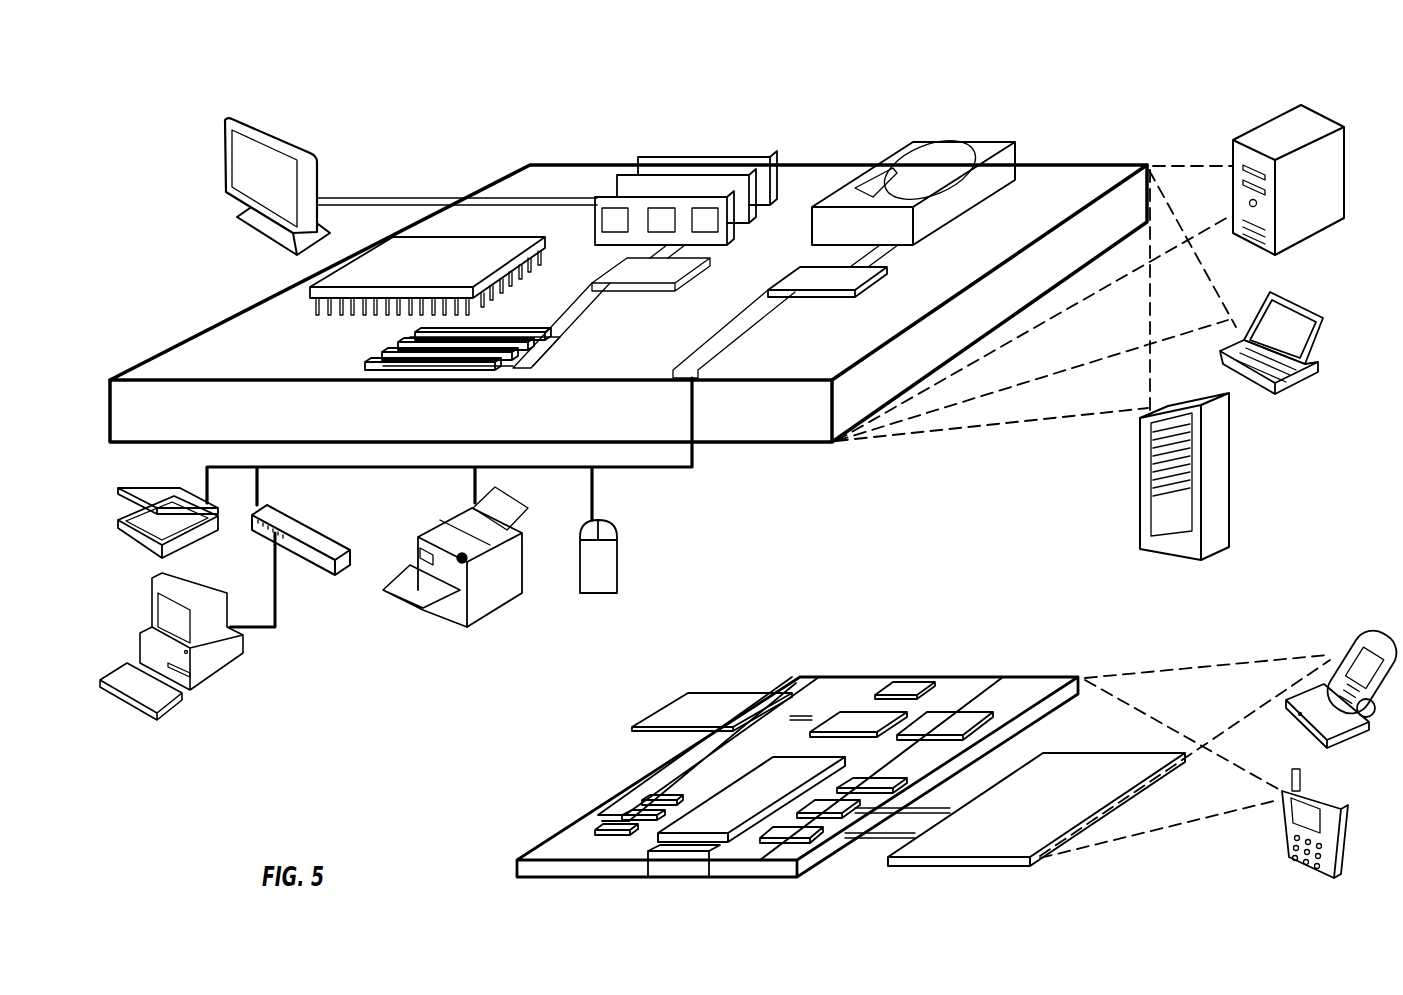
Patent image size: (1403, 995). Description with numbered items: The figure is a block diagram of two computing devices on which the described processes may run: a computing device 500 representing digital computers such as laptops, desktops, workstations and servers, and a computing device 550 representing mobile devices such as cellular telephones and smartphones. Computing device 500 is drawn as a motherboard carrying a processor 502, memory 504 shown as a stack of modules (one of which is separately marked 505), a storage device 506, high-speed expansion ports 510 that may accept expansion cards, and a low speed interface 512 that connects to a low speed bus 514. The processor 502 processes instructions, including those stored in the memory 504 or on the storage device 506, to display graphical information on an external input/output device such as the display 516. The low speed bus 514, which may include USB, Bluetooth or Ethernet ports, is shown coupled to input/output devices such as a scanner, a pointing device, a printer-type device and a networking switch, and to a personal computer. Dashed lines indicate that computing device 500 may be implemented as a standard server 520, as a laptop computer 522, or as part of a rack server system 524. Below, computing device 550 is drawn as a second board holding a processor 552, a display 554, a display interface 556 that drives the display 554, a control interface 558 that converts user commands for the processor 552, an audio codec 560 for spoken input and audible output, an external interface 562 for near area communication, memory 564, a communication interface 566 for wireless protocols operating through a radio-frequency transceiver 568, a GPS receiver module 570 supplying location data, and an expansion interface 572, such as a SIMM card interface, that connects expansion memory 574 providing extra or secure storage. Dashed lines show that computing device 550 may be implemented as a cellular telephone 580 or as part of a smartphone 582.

The computing device 500 is at (490, 138).
The processor 502 is at (305, 292).
The memory 504 is at (672, 157).
The memory module 505 is at (638, 160).
The storage device 506 is at (918, 142).
The high-speed expansion ports 510 is at (372, 348).
The low speed interface 512 is at (815, 280).
The low speed bus 514 is at (700, 380).
The display 516 is at (238, 118).
The standard server 520 is at (1240, 122).
The laptop computer 522 is at (1288, 388).
The rack server system 524 is at (1140, 530).
The computing device 550 is at (600, 746).
The processor 552 is at (725, 818).
The display 554 is at (1005, 840).
The display interface 556 is at (785, 840).
The control interface 558 is at (830, 810).
The audio codec 560 is at (873, 784).
The external interface 562 is at (673, 866).
The memory 564 is at (625, 815).
The communication interface 566 is at (850, 720).
The transceiver 568 is at (955, 720).
The GPS receiver module 570 is at (912, 690).
The expansion interface 572 is at (780, 688).
The expansion memory 574 is at (675, 700).
The flip mobile phone 580 is at (1335, 638).
The smartphone 582 is at (1283, 820).